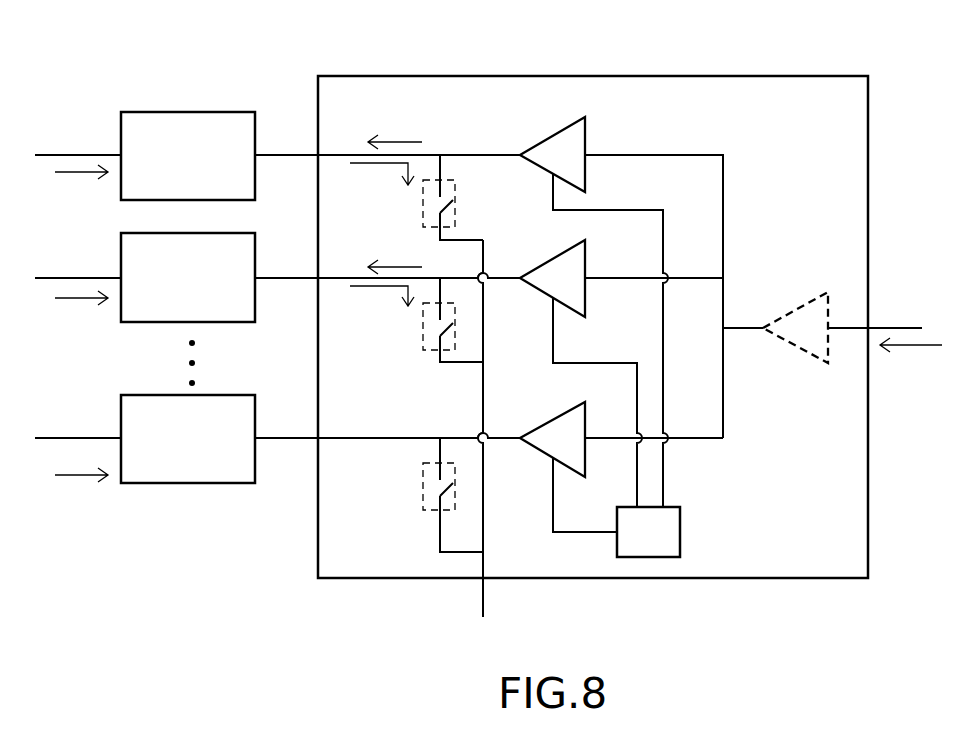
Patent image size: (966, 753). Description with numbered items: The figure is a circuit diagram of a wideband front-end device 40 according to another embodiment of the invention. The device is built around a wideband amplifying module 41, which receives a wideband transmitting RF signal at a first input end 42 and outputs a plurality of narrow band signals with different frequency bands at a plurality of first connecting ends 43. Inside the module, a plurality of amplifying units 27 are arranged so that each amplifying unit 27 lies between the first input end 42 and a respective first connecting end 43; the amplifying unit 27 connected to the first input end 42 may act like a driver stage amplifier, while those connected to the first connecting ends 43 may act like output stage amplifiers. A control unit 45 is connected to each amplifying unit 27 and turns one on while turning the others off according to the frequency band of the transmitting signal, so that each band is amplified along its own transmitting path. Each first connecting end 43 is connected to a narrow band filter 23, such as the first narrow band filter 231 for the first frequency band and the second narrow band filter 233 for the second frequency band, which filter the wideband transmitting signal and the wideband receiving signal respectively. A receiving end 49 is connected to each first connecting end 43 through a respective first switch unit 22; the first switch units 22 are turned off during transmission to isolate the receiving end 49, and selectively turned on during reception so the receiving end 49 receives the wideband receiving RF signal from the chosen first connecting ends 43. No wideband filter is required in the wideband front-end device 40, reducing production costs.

The wideband front-end device 40 is at (423, 40).
The wideband amplifying module 41 is at (765, 91).
The first input end 42 is at (906, 326).
The first connecting ends 43 is at (275, 151).
The control unit 45 is at (676, 522).
The receiving end 49 is at (481, 605).
The first switch units 22 is at (423, 208).
The narrow band filters 23 is at (181, 94).
The first narrow band filter 231 is at (198, 120).
The second narrow band filter 233 is at (172, 312).
The amplifying units 27 is at (555, 140).